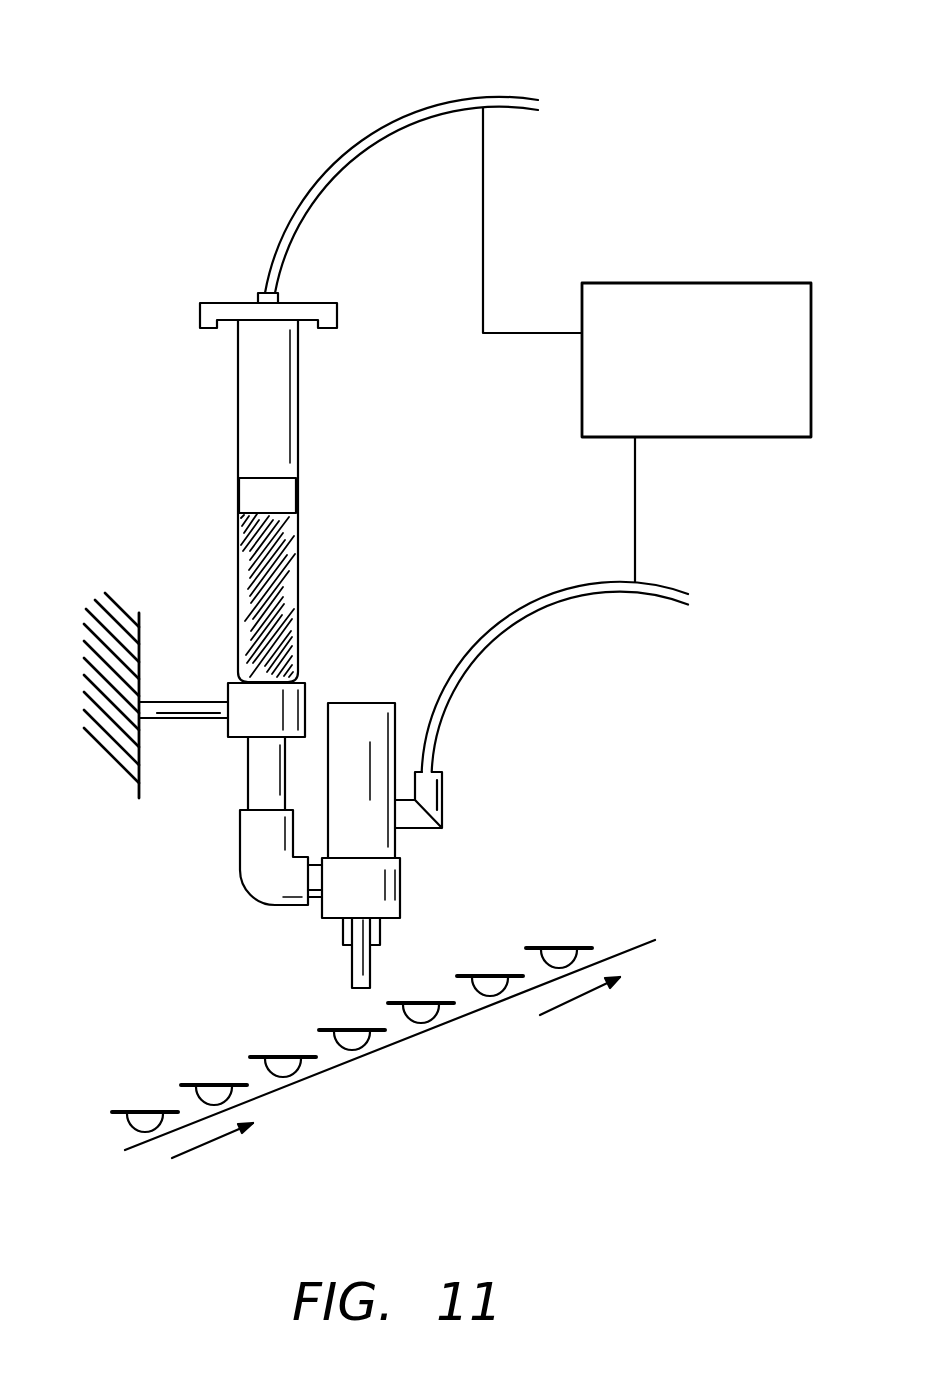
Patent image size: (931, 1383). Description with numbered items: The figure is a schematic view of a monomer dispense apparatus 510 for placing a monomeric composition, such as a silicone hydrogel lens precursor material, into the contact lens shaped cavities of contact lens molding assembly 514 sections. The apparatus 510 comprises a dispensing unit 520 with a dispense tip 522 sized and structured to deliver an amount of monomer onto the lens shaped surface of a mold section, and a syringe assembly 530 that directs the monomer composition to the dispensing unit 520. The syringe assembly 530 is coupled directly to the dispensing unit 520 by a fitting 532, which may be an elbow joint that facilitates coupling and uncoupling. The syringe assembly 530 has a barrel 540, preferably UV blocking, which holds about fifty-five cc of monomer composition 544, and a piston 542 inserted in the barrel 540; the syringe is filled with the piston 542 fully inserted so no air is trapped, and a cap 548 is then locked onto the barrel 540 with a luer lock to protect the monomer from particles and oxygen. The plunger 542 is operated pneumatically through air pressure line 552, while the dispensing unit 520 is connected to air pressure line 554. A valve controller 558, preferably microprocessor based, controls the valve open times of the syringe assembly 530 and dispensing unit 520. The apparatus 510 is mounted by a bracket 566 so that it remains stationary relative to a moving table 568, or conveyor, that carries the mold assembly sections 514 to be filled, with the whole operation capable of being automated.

The apparatus 510 is at (437, 497).
The contact lens molding assembly 514 is at (415, 1033).
The dispensing unit 520 is at (423, 868).
The dispense tip 522 is at (367, 972).
The syringe assembly 530 is at (270, 443).
The fitting 532 is at (242, 872).
The barrel 540 is at (298, 572).
The piston 542 is at (248, 495).
The monomer composition 544 is at (277, 610).
The cap 548 is at (323, 303).
The air pressure line 552 is at (405, 112).
The air pressure line 554 is at (500, 635).
The valve controller 558 is at (722, 381).
The bracket 566 is at (183, 720).
The moving table 568 is at (300, 1080).